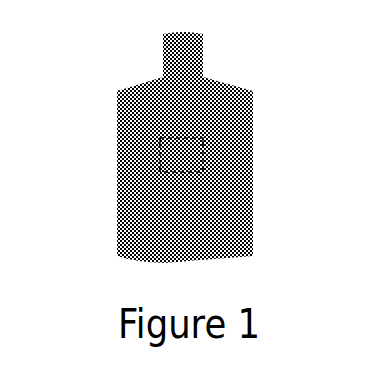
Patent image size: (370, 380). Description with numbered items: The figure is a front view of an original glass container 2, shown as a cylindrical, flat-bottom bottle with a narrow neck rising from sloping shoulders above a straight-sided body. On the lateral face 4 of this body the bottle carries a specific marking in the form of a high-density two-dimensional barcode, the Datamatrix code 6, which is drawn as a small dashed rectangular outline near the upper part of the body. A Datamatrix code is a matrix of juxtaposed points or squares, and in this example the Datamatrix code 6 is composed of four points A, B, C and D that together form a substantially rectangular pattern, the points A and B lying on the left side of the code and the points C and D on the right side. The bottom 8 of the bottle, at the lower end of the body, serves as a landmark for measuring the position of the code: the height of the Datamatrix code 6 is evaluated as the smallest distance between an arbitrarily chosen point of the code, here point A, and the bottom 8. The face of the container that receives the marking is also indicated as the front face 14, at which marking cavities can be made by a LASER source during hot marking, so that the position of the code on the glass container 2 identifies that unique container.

The glass container 2 is at (170, 153).
The lateral face 4 is at (182, 241).
The Datamatrix code 6 is at (177, 145).
The bottom 8 is at (153, 258).
The front face 14 is at (168, 212).
The point A is at (160, 151).
The point B is at (163, 171).
The point C is at (208, 149).
The point D is at (207, 171).